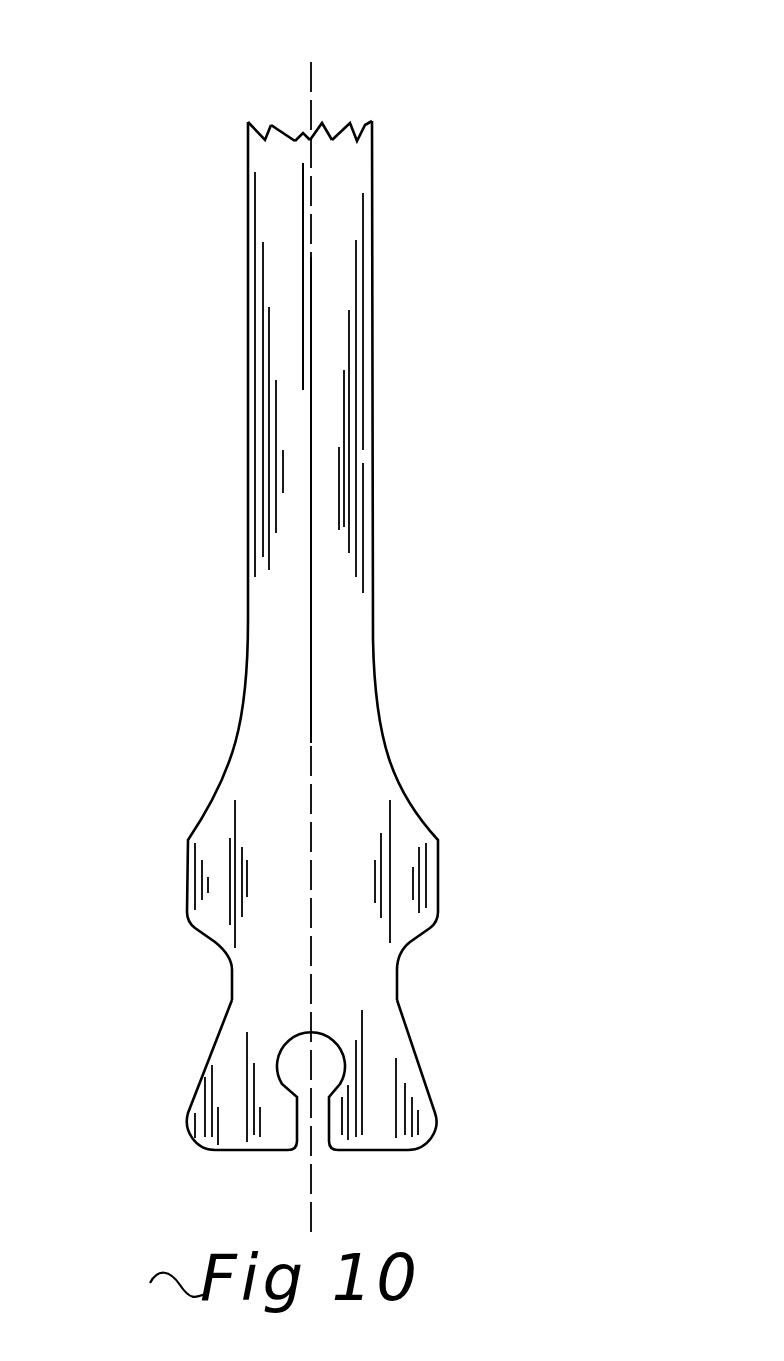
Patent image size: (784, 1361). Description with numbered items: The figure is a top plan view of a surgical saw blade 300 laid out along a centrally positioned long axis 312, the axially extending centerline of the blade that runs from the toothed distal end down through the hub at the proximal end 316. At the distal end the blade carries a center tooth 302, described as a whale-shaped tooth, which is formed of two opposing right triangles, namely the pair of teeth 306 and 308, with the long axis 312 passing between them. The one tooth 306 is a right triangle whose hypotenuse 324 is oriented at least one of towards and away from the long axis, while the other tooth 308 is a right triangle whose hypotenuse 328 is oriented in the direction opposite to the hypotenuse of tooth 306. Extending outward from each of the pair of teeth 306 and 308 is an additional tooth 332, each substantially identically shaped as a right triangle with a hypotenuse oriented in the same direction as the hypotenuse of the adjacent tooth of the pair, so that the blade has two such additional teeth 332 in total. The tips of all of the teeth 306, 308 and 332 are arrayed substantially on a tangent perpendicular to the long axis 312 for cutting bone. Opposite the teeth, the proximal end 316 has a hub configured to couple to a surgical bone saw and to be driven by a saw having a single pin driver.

The surgical saw blade 300 is at (452, 372).
The center tooth 302 is at (327, 95).
The tooth 306 is at (323, 123).
The tooth 308 is at (298, 140).
The centrally positioned long axis 312 is at (312, 643).
The proximal end 316 is at (417, 1052).
The hypotenuse 324 is at (312, 139).
The hypotenuse 328 is at (298, 137).
The additional tooth 332 is at (351, 123).